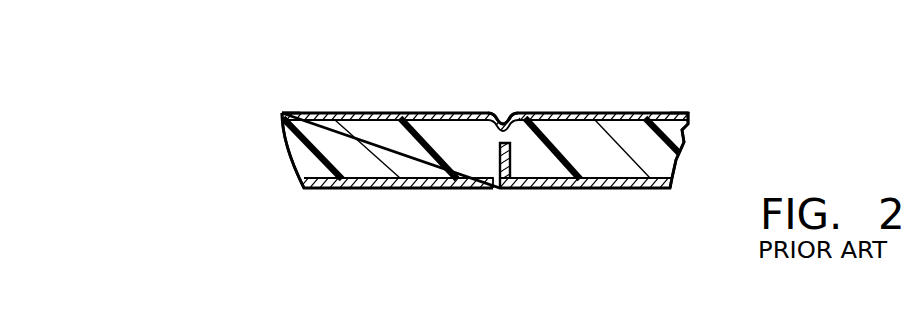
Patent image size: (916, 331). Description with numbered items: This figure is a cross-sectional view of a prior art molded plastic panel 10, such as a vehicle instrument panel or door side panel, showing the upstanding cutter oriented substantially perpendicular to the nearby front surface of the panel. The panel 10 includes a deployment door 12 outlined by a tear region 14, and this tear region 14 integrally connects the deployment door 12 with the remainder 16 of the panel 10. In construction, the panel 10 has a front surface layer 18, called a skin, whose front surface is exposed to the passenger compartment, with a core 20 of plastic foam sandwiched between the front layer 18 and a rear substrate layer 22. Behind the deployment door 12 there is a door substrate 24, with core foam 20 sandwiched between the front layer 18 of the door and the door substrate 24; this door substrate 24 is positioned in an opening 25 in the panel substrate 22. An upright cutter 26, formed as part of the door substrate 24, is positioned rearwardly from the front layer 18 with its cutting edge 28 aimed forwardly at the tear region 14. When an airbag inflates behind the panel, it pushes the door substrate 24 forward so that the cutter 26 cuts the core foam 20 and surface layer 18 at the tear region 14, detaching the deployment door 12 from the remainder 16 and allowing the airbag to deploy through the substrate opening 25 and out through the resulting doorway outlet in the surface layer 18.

The molded plastic panel 10 is at (633, 86).
The deployment door 12 is at (546, 104).
The tear region 14 is at (504, 102).
The remainder of the panel 16 is at (361, 103).
The front surface layer 18 is at (308, 113).
The core 20 is at (297, 156).
The rear substrate layer 22 is at (406, 189).
The door substrate 24 is at (610, 189).
The opening 25 is at (494, 190).
The upright cutter 26 is at (520, 155).
The cutting edge 28 is at (493, 146).